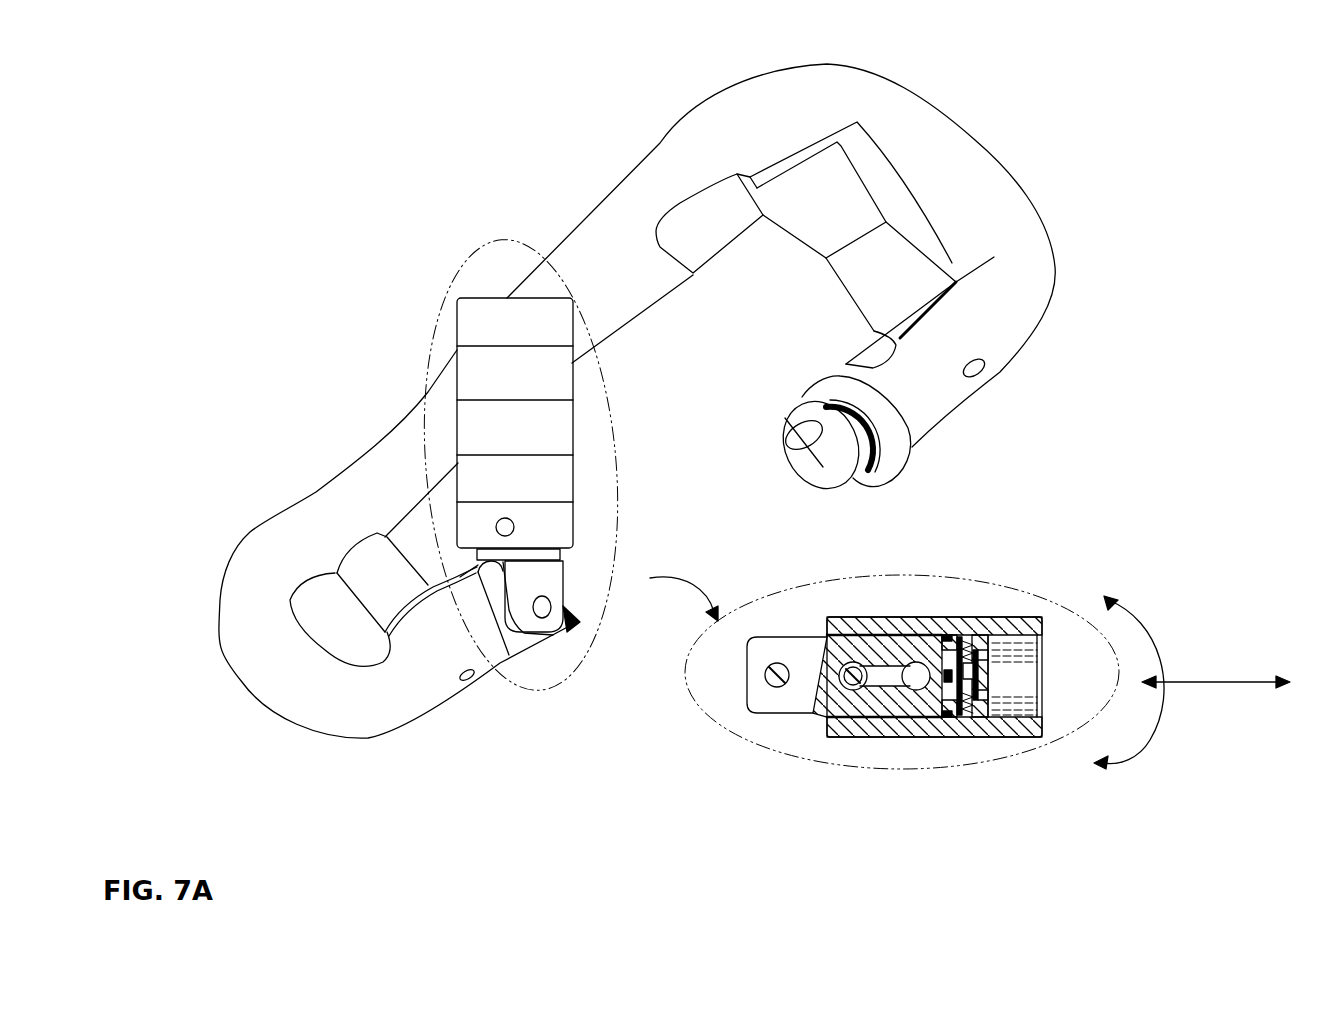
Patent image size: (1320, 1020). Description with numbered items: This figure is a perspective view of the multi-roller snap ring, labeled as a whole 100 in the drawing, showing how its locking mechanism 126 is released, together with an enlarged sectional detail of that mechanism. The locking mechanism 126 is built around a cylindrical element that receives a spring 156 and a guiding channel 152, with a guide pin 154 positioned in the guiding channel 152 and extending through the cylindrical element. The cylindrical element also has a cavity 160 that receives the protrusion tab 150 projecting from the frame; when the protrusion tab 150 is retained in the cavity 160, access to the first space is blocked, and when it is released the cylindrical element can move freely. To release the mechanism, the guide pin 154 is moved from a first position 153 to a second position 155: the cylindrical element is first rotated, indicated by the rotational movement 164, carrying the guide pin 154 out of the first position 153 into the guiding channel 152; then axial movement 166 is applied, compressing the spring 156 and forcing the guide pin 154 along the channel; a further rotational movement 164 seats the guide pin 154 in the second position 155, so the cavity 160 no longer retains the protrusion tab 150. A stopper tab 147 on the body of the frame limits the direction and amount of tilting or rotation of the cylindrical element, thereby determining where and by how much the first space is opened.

The connector assembly 100 is at (362, 202).
The locking mechanism 126 is at (440, 317).
The stopper tab 147 is at (578, 622).
The protrusion tab 150 is at (803, 433).
The guiding channel 152 is at (885, 672).
The first position 153 is at (905, 692).
The guide pin 154 is at (815, 715).
The second position 155 is at (822, 633).
The spring 156 is at (985, 697).
The cavity 160 is at (1013, 672).
The rotational movement 164 is at (1149, 677).
The axial movement 166 is at (1216, 701).